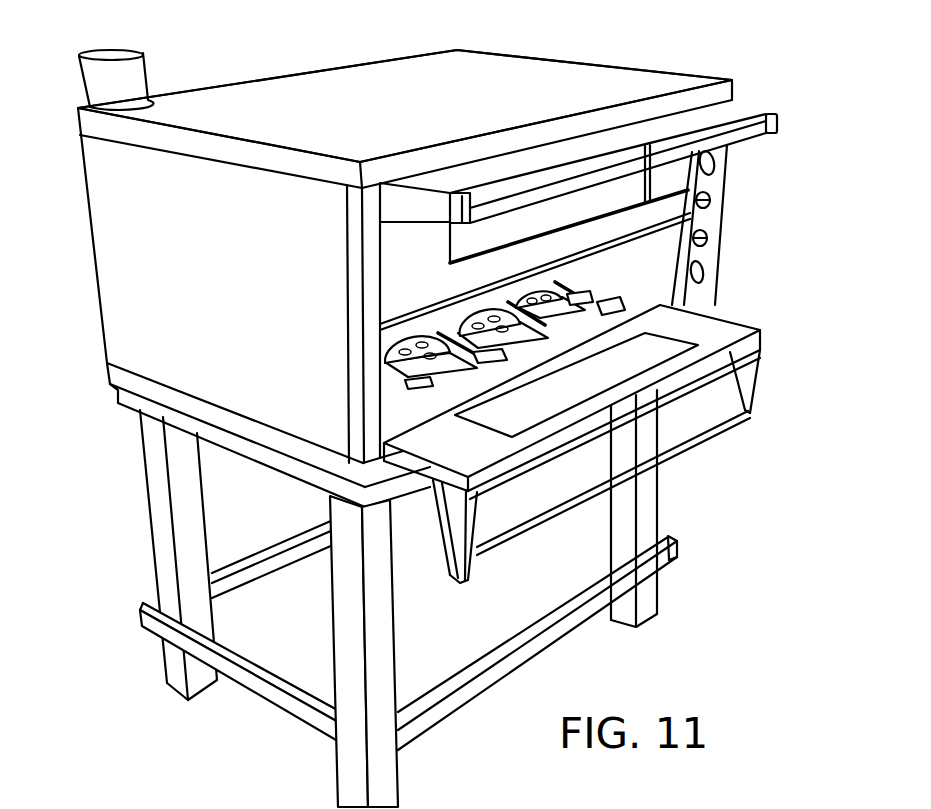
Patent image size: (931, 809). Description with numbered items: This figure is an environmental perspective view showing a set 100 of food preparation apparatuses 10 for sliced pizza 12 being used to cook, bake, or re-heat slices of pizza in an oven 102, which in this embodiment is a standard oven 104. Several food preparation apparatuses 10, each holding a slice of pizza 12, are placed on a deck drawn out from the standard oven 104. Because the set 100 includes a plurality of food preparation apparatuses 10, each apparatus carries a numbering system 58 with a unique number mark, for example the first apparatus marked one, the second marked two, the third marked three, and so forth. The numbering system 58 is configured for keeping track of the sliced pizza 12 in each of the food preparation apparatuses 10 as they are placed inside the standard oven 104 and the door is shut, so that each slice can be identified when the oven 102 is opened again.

The set of food preparation apparatuses 100 is at (466, 407).
The oven 102 is at (598, 68).
The standard oven 104 is at (405, 106).
The numbering system 58 is at (605, 269).
The food preparation apparatus 10 is at (425, 403).
The sliced pizza 12 is at (407, 335).